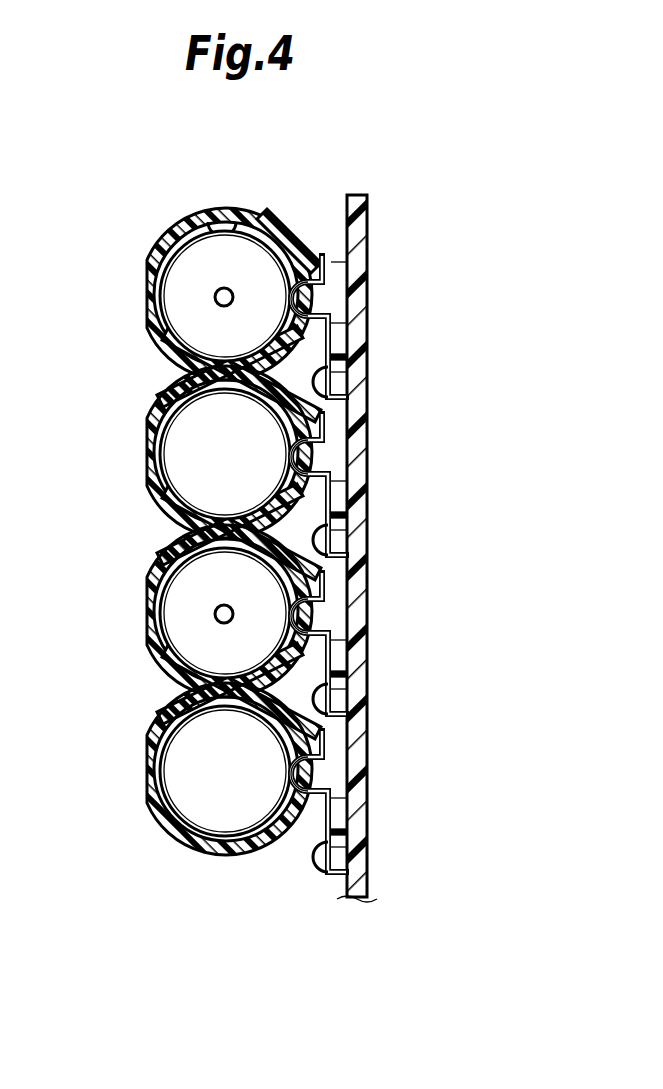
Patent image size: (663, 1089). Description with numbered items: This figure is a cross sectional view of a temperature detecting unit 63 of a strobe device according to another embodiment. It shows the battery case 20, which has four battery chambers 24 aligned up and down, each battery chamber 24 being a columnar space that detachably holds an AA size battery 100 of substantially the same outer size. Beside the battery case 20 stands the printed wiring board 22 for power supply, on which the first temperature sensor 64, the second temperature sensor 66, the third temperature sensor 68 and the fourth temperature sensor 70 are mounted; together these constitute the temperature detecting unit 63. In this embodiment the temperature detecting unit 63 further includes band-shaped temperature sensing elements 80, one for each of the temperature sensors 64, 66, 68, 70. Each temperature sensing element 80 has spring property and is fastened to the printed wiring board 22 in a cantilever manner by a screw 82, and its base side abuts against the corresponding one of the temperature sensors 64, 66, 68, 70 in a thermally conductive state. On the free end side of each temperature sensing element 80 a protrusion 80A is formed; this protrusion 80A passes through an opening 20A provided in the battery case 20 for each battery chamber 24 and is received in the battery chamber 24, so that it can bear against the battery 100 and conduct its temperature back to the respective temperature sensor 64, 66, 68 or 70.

The battery case 20 is at (153, 255).
The opening 20A is at (339, 290).
The printed wiring board 22 is at (363, 217).
The battery chamber 24 is at (200, 221).
The temperature detecting unit 63 is at (345, 265).
The first temperature sensor 64 is at (338, 333).
The second temperature sensor 66 is at (348, 505).
The third temperature sensor 68 is at (343, 650).
The fourth temperature sensor 70 is at (338, 810).
The temperature sensing element 80 is at (332, 316).
The protrusion 80A is at (292, 290).
The screw 82 is at (324, 380).
The battery 100 is at (243, 260).